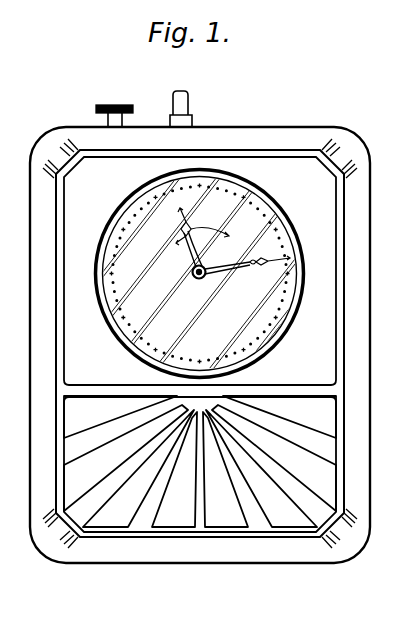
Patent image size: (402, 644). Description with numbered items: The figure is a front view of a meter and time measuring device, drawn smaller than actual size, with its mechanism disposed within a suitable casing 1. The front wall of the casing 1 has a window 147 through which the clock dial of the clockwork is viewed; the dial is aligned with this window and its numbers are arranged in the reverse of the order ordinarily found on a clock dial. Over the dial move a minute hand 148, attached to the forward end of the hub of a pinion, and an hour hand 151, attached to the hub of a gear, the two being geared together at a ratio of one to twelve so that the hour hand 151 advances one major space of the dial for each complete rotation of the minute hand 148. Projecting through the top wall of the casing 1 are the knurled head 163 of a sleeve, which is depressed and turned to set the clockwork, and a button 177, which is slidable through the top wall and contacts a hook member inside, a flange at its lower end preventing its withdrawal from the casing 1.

The casing 1 is at (276, 127).
The knurled head 163 is at (113, 105).
The button 177 is at (187, 107).
The window 147 is at (280, 328).
The minute hand 148 is at (228, 266).
The hour hand 151 is at (191, 268).